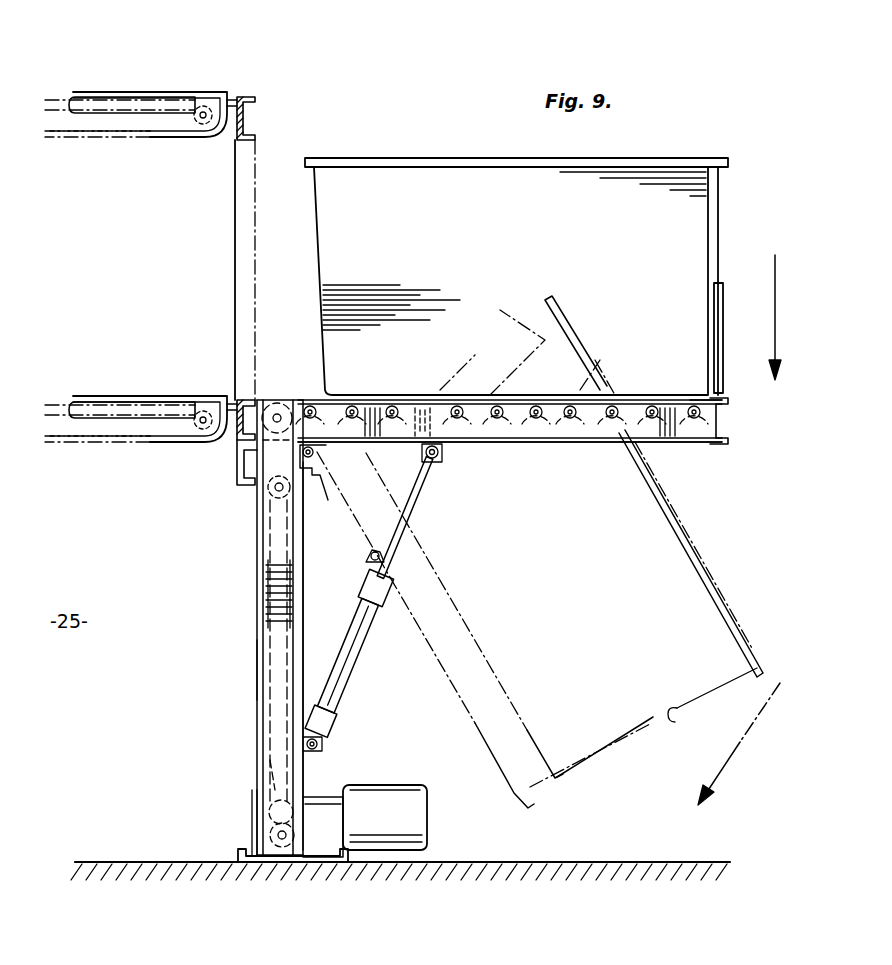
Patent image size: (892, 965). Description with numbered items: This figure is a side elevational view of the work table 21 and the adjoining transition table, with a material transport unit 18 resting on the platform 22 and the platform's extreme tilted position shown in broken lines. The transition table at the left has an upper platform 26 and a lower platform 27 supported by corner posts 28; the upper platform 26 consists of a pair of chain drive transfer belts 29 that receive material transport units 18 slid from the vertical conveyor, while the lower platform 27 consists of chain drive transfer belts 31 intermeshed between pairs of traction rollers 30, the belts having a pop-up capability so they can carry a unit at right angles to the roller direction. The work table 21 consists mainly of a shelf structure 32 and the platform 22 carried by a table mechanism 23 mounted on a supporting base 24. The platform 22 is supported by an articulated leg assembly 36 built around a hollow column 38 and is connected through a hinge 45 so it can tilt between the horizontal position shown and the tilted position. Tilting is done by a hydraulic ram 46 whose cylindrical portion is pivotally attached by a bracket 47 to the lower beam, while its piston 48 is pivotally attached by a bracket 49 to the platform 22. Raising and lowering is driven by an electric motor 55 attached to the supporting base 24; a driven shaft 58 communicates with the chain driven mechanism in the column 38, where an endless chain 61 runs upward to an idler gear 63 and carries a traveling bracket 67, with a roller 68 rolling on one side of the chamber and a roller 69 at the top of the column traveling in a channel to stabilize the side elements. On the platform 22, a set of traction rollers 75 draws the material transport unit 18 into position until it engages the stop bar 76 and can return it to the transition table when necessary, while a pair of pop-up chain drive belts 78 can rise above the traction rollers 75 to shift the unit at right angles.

The material transport unit 18 is at (490, 190).
The work table 21 is at (680, 447).
The platform 22 is at (662, 395).
The table mechanism 23 is at (312, 778).
The supporting base 24 is at (325, 862).
The upper platform 26 is at (150, 85).
The lower platform 27 is at (100, 385).
The corner posts 28 is at (235, 208).
The chain drive transfer belts 29 is at (83, 140).
The traction rollers 30 is at (210, 395).
The chain drive transfer belts 31 is at (60, 443).
The shelf structure 32 is at (700, 432).
The articulated leg assembly 36 is at (257, 562).
The hollow column 38 is at (257, 672).
The hinge 45 is at (310, 460).
The hydraulic ram 46 is at (345, 622).
The bracket 47 is at (330, 728).
The piston 48 is at (403, 500).
The bracket 49 is at (441, 454).
The electric motor 55 is at (413, 826).
The driven shaft 58 is at (270, 832).
The endless chain 61 is at (268, 612).
The idler gear 63 is at (268, 500).
The traveling bracket 67 is at (268, 780).
The roller 68 is at (278, 808).
The roller 69 is at (278, 402).
The traction rollers 75 is at (538, 395).
The stop bar 76 is at (723, 297).
The chain drive belts 78 is at (420, 395).